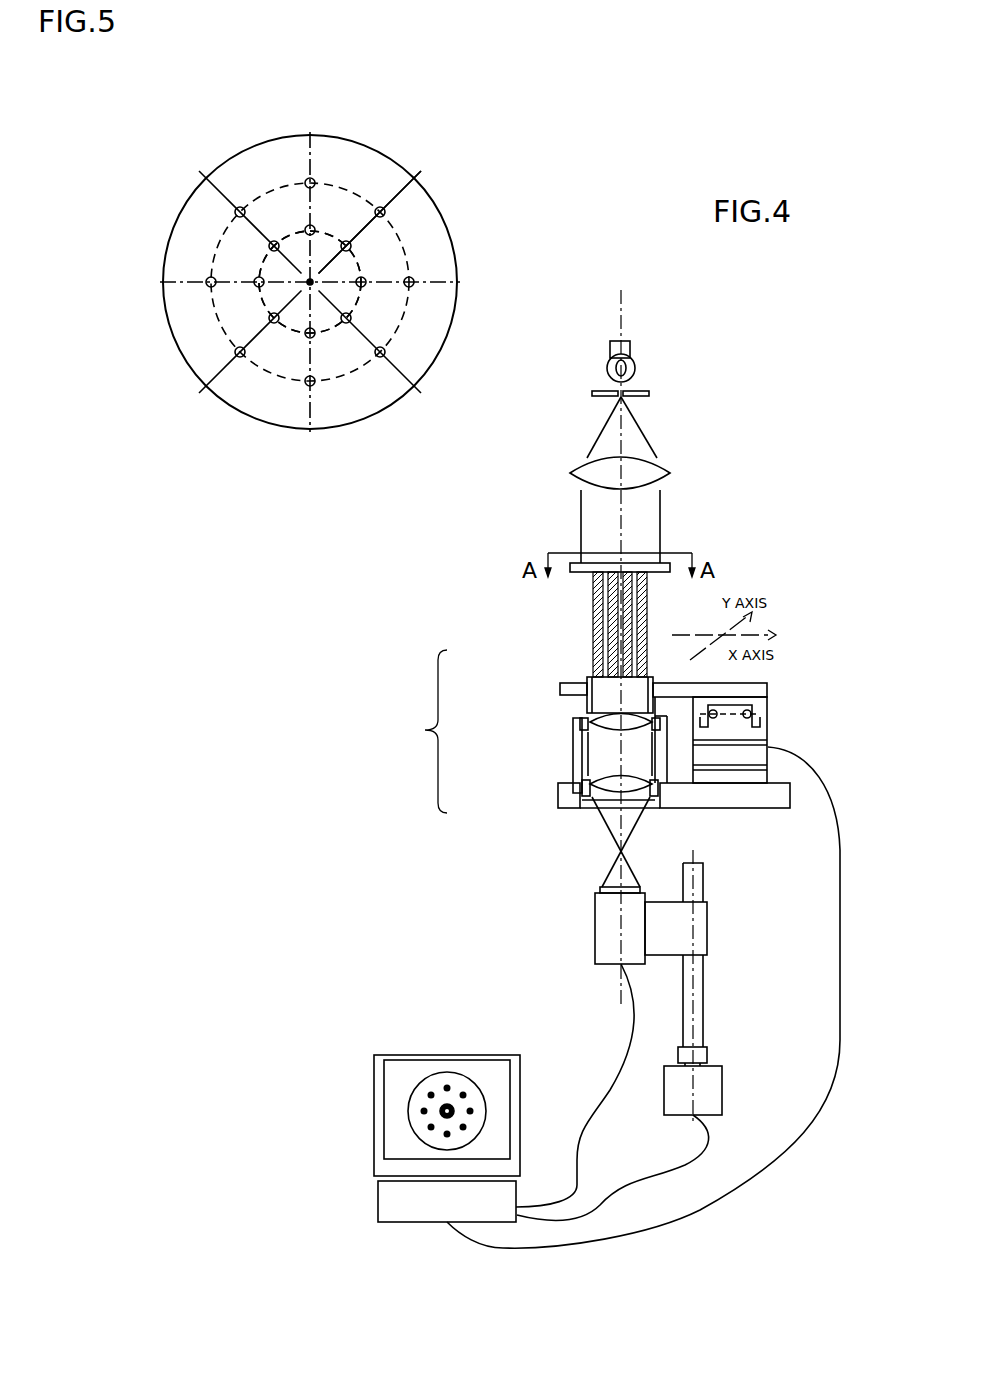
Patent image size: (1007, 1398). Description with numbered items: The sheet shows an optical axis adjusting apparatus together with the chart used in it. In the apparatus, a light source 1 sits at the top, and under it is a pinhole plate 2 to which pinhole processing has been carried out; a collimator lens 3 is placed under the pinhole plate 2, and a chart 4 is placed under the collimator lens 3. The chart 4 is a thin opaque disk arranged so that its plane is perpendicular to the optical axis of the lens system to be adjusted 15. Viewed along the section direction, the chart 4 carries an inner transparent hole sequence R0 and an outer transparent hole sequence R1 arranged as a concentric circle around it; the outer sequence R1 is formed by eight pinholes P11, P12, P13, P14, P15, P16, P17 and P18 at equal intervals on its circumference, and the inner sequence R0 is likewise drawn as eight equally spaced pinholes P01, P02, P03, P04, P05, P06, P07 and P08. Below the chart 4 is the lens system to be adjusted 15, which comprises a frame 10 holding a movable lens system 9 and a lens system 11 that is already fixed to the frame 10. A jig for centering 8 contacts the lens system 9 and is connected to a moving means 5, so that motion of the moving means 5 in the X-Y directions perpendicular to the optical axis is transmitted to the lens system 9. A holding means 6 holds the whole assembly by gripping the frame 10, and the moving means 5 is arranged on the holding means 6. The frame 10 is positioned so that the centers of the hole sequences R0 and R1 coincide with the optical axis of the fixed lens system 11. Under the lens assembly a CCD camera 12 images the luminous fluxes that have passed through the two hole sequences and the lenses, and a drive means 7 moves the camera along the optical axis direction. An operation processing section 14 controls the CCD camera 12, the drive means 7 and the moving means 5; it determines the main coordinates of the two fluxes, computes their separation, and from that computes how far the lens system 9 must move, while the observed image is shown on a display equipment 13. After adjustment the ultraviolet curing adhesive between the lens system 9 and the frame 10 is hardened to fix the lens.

In FIG. 4, the light source 1 is at (630, 349).
In FIG. 4, the pinhole plate 2 is at (649, 394).
In FIG. 4, the collimator lens 3 is at (645, 478).
In FIG. 4, the chart 4 is at (660, 567).
In FIG. 4, the moving means 5 is at (760, 705).
In FIG. 4, the holding means 6 is at (748, 797).
In FIG. 4, the drive means 7 is at (700, 993).
In FIG. 4, the jig for centering 8 is at (640, 687).
In FIG. 4, the lens system 9 is at (608, 721).
In FIG. 4, the frame 10 is at (580, 748).
In FIG. 4, the lens system 11 is at (610, 790).
In FIG. 4, the CCD camera 12 is at (610, 935).
In FIG. 4, the display equipment 13 is at (400, 1085).
In FIG. 4, the operation processing section 14 is at (400, 1203).
In FIG. 4, the lens system to be adjusted 15 is at (524, 730).
In FIG. 5, the fiber position P01 is at (317, 228).
In FIG. 5, the fiber position P02 is at (352, 246).
In FIG. 5, the fiber position P03 is at (366, 288).
In FIG. 5, the fiber position P04 is at (347, 324).
In FIG. 5, the fiber position P05 is at (306, 338).
In FIG. 5, the fiber position P06 is at (268, 318).
In FIG. 5, the fiber position P07 is at (256, 279).
In FIG. 5, the fiber position P08 is at (275, 240).
In FIG. 5, the pinhole P11 is at (316, 182).
In FIG. 5, the pinhole P12 is at (386, 212).
In FIG. 5, the pinhole P13 is at (413, 289).
In FIG. 5, the pinhole P14 is at (381, 358).
In FIG. 5, the pinhole P15 is at (306, 386).
In FIG. 5, the pinhole P16 is at (235, 352).
In FIG. 5, the pinhole P17 is at (209, 278).
In FIG. 5, the pinhole P18 is at (240, 207).
In FIG. 5, the transparent hole sequence R0 is at (388, 205).
In FIG. 5, the transparent hole sequence R1 is at (351, 313).